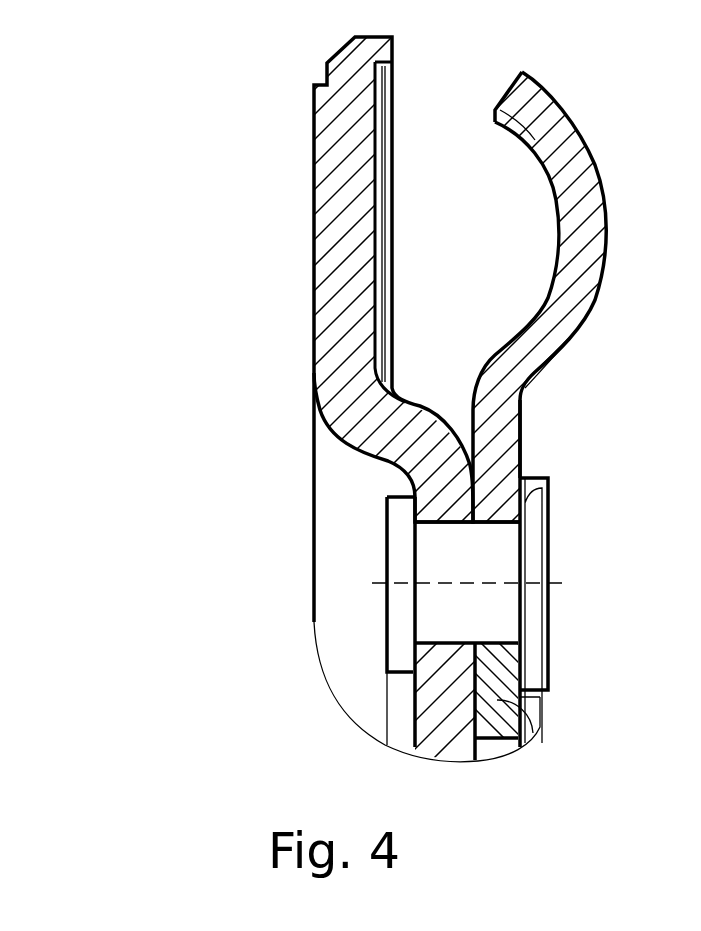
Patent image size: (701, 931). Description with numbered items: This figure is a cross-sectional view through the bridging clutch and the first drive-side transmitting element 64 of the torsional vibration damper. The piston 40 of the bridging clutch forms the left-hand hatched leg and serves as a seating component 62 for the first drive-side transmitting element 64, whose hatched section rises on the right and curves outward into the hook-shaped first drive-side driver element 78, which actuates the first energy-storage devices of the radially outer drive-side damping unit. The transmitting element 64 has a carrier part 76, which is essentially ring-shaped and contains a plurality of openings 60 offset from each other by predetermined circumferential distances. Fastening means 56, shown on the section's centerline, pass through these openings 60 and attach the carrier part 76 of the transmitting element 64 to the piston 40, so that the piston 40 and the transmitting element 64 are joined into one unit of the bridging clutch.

The piston 40 is at (335, 163).
The seating component 62 is at (338, 340).
The first drive-side driver element 78 is at (565, 147).
The first drive-side transmitting element 64 is at (500, 432).
The opening 60 is at (497, 527).
The fastening means 56 is at (452, 552).
The carrier part 76 is at (520, 698).